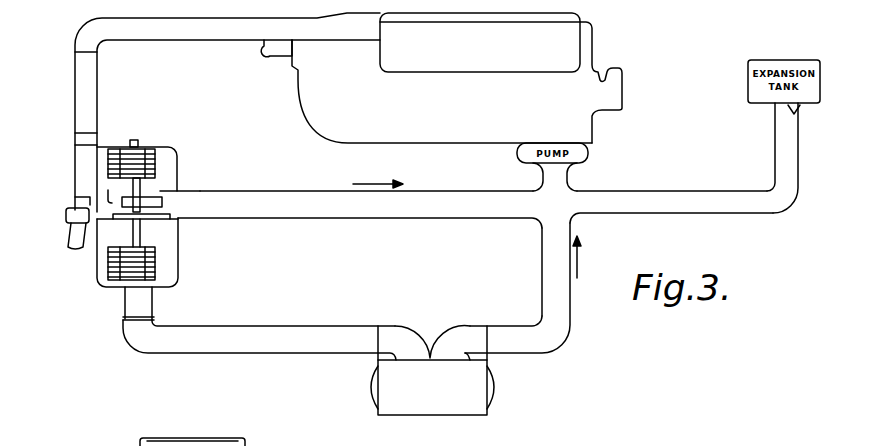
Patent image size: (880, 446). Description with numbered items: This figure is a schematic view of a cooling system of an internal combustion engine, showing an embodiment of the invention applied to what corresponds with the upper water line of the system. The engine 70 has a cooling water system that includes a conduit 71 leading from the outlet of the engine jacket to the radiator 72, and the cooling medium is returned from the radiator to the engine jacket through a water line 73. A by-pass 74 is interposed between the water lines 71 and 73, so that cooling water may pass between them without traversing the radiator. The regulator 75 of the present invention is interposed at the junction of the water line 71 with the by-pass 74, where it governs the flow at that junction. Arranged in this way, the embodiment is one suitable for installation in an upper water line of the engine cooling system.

The engine 70 is at (327, 126).
The conduit 71 is at (224, 37).
The radiator 72 is at (467, 410).
The water line 73 is at (562, 310).
The by-pass 74 is at (352, 205).
The regulator 75 is at (178, 182).